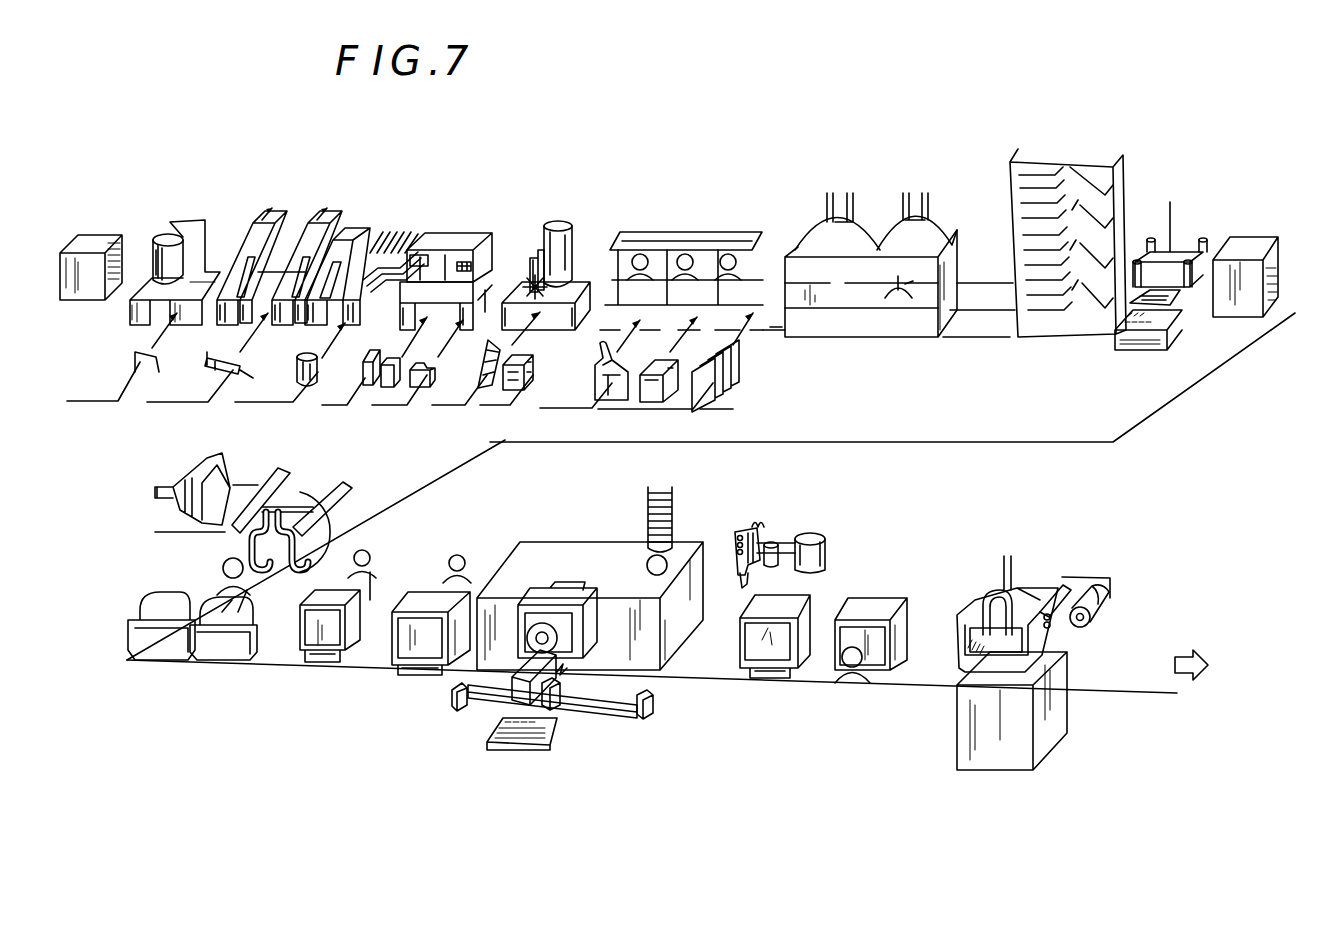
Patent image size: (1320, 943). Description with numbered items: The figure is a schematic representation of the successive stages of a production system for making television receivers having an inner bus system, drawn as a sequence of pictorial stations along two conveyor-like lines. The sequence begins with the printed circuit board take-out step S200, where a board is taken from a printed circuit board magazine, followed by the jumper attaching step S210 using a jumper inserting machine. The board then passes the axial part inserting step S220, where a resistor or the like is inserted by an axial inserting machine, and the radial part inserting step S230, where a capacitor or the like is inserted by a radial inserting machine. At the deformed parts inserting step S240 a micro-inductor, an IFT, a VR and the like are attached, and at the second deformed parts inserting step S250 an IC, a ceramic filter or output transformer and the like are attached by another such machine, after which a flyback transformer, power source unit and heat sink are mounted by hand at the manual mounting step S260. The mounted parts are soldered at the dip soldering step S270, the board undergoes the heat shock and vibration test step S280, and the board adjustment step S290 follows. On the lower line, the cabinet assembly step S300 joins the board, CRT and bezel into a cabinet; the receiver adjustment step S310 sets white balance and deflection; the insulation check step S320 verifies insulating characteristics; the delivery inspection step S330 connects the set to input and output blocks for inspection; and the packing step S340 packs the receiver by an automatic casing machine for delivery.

The printed circuit board take-out step S200 is at (109, 277).
The jumper attaching step S210 is at (191, 280).
The axial part inserting step S220 is at (279, 281).
The radial part inserting step S230 is at (370, 288).
The deformed parts inserting step S240 is at (466, 288).
The second deformed parts inserting step S250 is at (546, 257).
The manual mounting step S260 is at (679, 305).
The dip soldering step S270 is at (871, 247).
The heat shock and vibration test step S280 is at (1068, 225).
The board adjustment step S290 is at (1196, 275).
The cabinet assembly step S300 is at (455, 672).
The receiver adjustment step S310 is at (577, 637).
The insulation check step S320 is at (780, 619).
The delivery inspection step S330 is at (871, 660).
The packing step S340 is at (1033, 680).